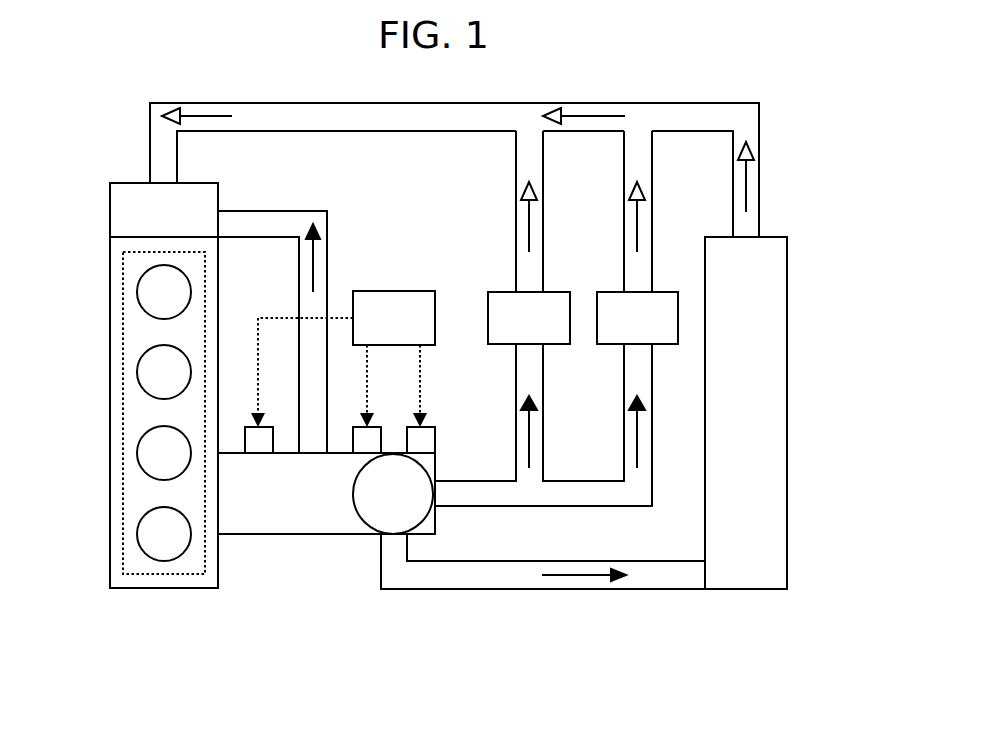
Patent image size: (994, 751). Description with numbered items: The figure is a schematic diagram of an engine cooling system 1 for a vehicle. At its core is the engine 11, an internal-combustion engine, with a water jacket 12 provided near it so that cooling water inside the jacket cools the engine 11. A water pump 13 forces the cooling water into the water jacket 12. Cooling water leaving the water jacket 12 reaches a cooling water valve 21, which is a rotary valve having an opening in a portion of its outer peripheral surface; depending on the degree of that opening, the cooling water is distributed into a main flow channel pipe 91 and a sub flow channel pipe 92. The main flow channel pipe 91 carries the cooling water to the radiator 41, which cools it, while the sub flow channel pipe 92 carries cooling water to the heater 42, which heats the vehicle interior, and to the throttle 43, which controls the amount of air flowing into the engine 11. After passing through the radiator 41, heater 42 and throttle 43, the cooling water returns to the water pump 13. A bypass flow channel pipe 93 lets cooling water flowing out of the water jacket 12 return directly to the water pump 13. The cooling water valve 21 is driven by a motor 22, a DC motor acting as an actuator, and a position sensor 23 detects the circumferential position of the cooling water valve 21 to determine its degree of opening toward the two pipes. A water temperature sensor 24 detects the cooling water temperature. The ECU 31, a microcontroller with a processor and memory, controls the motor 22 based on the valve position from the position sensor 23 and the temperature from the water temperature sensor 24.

The engine cooling system 1 is at (449, 612).
The engine 11 is at (165, 574).
The water jacket 12 is at (108, 588).
The water pump 13 is at (110, 209).
The cooling water valve 21 is at (362, 522).
The motor 22 is at (360, 447).
The position sensor 23 is at (435, 440).
The water temperature sensor 24 is at (259, 447).
The ECU 31 is at (393, 291).
The radiator 41 is at (748, 589).
The heater 42 is at (597, 344).
The throttle 43 is at (488, 344).
The main flow channel pipe 91 is at (528, 589).
The sub flow channel pipe 92 is at (528, 506).
The bypass flow channel pipe 93 is at (327, 211).